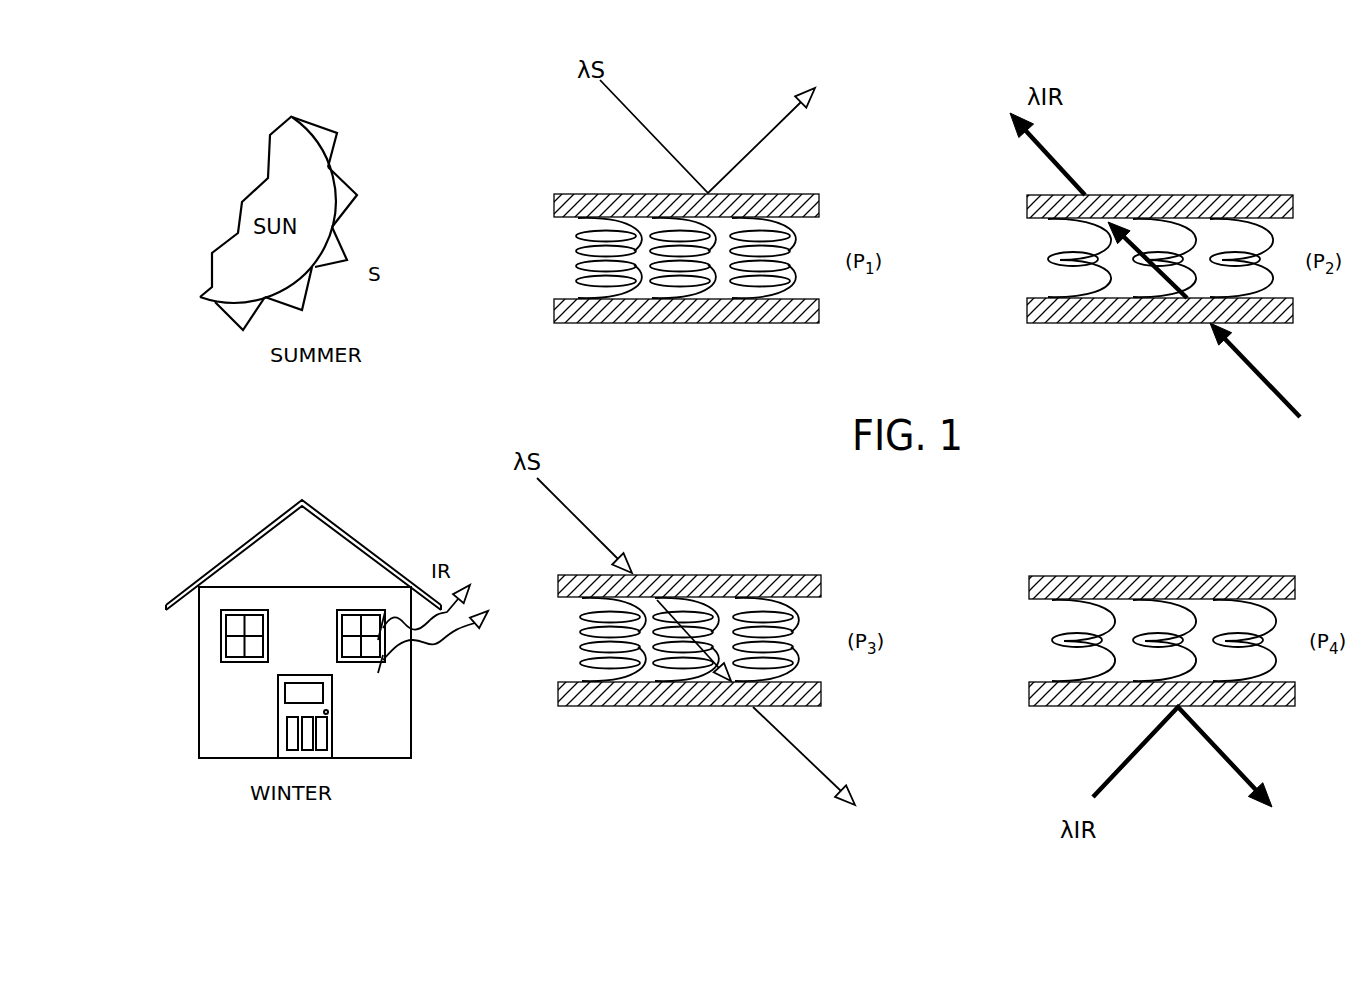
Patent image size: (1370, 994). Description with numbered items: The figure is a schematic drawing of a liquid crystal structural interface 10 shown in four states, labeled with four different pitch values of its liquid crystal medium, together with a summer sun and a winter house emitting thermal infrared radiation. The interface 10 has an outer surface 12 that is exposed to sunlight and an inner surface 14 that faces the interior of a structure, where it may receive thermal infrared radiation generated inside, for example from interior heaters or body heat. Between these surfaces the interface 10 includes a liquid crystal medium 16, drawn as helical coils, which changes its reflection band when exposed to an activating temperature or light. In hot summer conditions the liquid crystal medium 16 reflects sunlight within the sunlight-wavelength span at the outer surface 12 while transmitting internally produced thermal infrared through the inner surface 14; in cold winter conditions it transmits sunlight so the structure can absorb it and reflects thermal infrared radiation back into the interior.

The liquid crystal structural interface 10 is at (694, 145).
The outer surface 12 is at (603, 193).
The inner surface 14 is at (600, 324).
The liquid crystal medium 16 is at (548, 258).